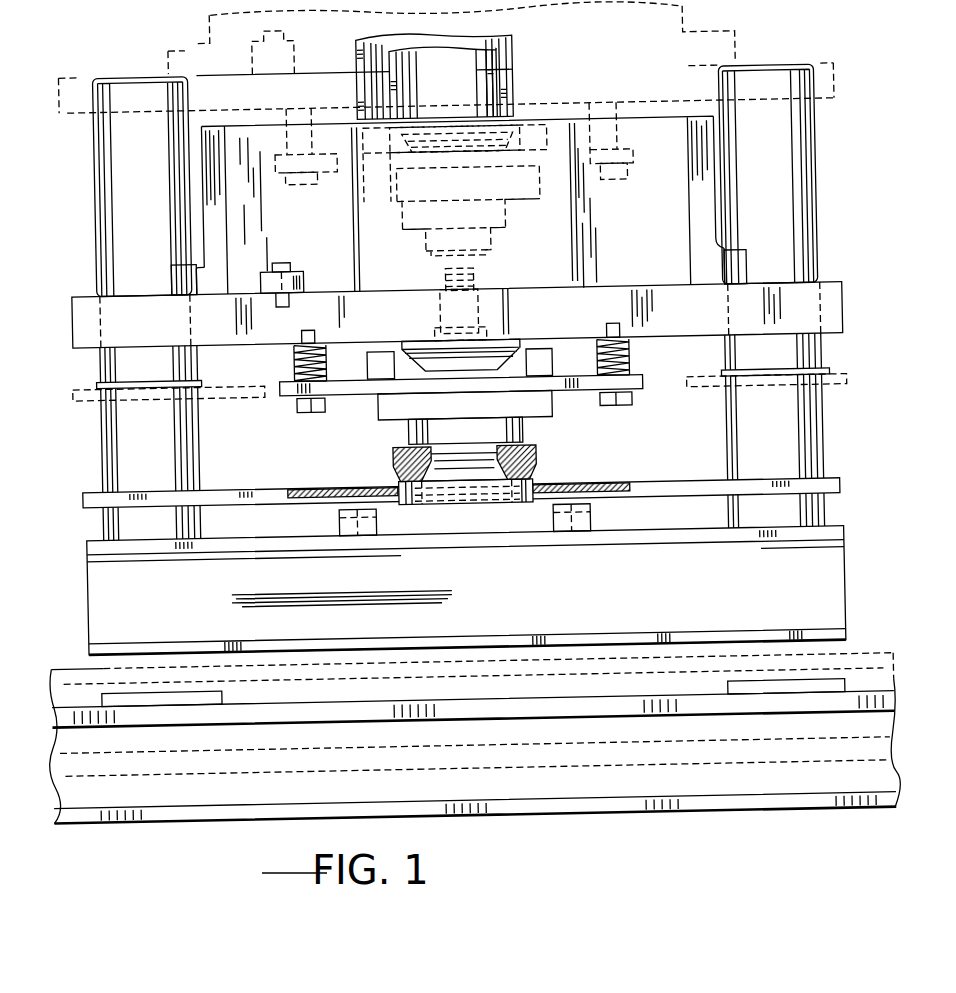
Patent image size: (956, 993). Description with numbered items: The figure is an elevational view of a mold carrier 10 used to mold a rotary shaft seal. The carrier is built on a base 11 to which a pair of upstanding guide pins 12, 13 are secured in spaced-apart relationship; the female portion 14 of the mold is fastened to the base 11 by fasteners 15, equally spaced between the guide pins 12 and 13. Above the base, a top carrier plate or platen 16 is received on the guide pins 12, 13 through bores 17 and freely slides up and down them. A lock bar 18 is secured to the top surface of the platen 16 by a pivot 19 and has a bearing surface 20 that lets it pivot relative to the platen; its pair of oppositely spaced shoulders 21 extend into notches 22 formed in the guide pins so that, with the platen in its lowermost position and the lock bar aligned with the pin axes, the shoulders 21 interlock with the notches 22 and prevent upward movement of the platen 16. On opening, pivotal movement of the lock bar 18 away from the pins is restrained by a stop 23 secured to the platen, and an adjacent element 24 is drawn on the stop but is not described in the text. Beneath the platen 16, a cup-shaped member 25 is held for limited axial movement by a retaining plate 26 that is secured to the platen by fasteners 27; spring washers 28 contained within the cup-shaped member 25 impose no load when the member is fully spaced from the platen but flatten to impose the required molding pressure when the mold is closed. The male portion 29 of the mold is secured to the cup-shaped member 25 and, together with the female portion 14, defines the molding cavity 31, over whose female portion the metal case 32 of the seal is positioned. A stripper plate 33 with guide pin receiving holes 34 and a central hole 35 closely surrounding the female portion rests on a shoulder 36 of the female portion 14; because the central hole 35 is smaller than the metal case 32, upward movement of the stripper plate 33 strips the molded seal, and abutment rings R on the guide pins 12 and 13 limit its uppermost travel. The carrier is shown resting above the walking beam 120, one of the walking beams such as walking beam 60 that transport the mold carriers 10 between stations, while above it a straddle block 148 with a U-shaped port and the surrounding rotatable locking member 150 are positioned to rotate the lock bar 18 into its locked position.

The mold carrier 10 is at (460, 328).
The base 11 is at (686, 597).
The guide pin 12 is at (123, 433).
The guide pin 13 is at (809, 435).
The female portion of the mold 14 is at (532, 478).
The fasteners 15 is at (339, 519).
The top carrier plate or platen 16 is at (662, 69).
The bores 17 is at (116, 69).
The lock bar 18 is at (274, 129).
The pivot 19 is at (507, 309).
The bearing surface 20 is at (477, 285).
The shoulders 21 is at (213, 32).
The notches 22 is at (188, 264).
The stop 23 is at (311, 280).
The adjusting stud 24 is at (286, 259).
The cup-shaped member 25 is at (396, 190).
The retaining plate 26 is at (642, 158).
The fasteners 27 is at (623, 183).
The spring washers 28 is at (413, 339).
The male portion of the mold 29 is at (519, 214).
The molding cavity 31 is at (409, 429).
The metal case 32 is at (396, 447).
The stripper plate 33 is at (840, 375).
The guide pin receiving holes 34 is at (781, 471).
The central hole 35 is at (412, 501).
The shoulder 36 is at (585, 482).
The walking beam 60 is at (473, 726).
The walking beam 120 is at (483, 697).
The straddle block 148 is at (514, 64).
The rotatable locking member 150 is at (521, 37).
The abutment rings R is at (169, 374).